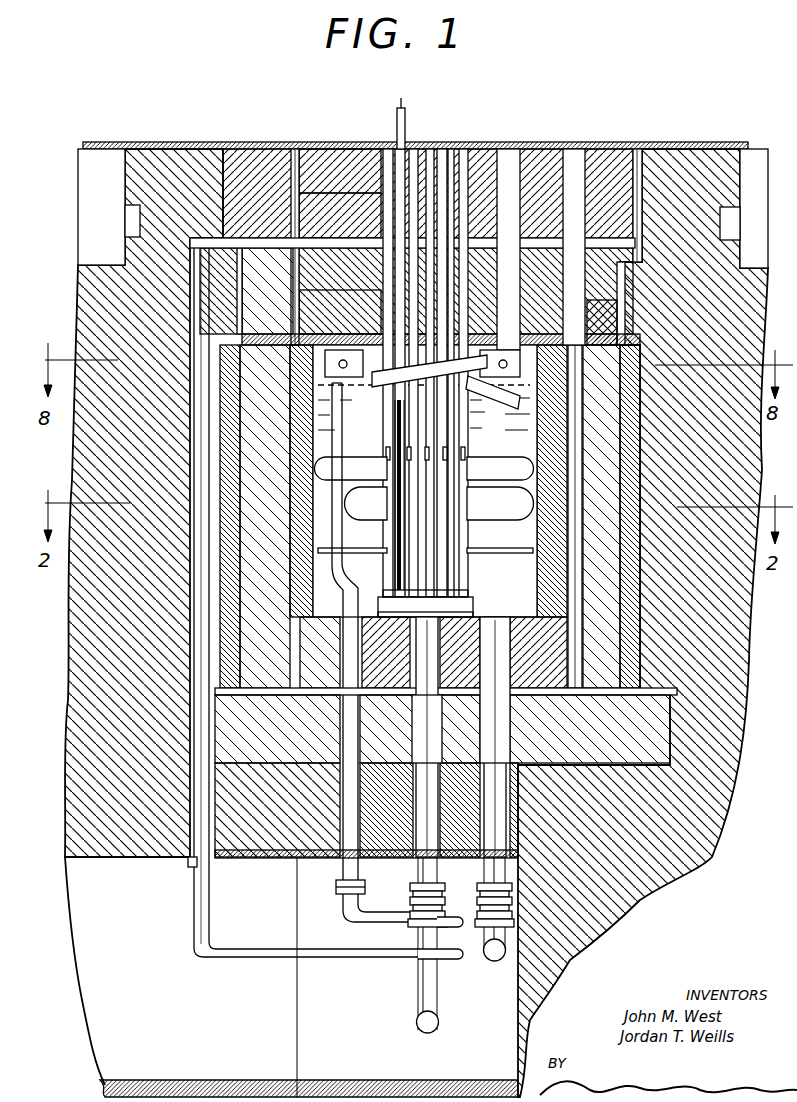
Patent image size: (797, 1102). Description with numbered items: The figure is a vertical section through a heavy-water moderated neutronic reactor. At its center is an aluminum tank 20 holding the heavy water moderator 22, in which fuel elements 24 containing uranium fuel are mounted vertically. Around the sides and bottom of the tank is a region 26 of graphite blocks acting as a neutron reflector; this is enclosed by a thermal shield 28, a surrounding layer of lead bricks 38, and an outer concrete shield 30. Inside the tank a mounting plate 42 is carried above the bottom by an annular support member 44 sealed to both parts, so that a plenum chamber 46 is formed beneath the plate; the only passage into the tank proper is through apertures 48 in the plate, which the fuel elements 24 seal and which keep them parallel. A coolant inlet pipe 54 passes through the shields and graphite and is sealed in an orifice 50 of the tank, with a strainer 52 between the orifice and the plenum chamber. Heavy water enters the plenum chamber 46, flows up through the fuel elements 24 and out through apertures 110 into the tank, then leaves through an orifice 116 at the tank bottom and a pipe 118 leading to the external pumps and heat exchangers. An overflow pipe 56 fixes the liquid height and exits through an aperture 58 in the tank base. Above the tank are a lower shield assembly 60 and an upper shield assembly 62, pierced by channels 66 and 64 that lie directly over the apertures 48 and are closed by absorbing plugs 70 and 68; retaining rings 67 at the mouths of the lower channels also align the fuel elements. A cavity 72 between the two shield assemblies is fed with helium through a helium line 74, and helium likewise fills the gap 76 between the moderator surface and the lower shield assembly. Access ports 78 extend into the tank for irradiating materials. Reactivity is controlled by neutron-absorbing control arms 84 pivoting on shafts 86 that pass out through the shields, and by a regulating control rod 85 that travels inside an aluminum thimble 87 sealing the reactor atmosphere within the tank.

The tank 20 is at (540, 530).
The heavy water moderator 22 is at (378, 453).
The fuel elements 24 is at (466, 442).
The region of neutron reflecting material 26 is at (276, 596).
The thermal shield 28 is at (240, 494).
The concrete shield 30 is at (130, 466).
The layer of lead bricks 38 is at (238, 416).
The mounting plate 42 is at (452, 598).
The annular support member 44 is at (470, 613).
The plenum chamber 46 is at (396, 622).
The apertures 48 is at (418, 598).
The orifice 50 is at (436, 624).
The strainer 52 is at (464, 652).
The coolant inlet pipe 54 is at (412, 720).
The overflow pipe 56 is at (340, 718).
The aperture 58 is at (342, 628).
The lower shield assembly 60 is at (608, 306).
The upper shield assembly 62 is at (528, 165).
The channels 64 is at (372, 157).
The channels 66 is at (376, 297).
The retaining rings 67 is at (460, 352).
The plug 68 is at (374, 186).
The plug 70 is at (376, 264).
The cavity 72 is at (272, 247).
The helium line 74 is at (192, 632).
The gap 76 is at (488, 350).
The access ports 78 is at (380, 515).
The control arms 84 is at (385, 386).
The regulating control rod 85 is at (396, 565).
The shaft 86 is at (345, 362).
The thimble 87 is at (407, 132).
The apertures 110 is at (466, 454).
The orifice 116 is at (508, 627).
The pipe 118 is at (492, 736).